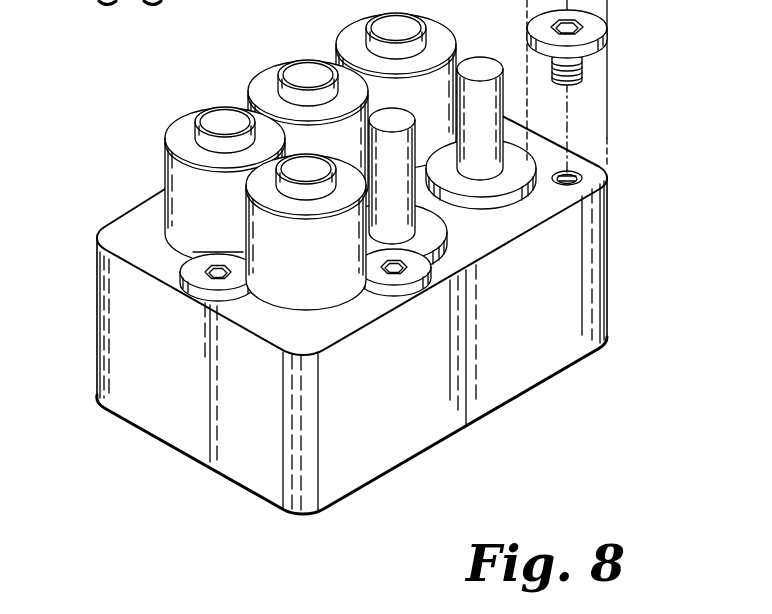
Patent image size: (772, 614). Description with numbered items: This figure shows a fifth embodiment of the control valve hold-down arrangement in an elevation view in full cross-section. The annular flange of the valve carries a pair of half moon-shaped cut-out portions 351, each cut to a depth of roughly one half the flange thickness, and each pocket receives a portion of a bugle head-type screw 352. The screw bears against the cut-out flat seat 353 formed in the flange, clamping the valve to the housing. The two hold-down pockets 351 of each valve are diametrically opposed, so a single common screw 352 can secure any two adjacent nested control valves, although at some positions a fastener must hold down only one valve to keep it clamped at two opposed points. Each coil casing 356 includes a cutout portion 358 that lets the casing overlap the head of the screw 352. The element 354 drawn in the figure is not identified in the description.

The half moon-shaped cut-out portion 351 is at (532, 166).
The bugle head-type screw 352 is at (600, 23).
The cut-out flat seat 353 is at (582, 165).
The raised seat 354 is at (478, 215).
The coil casing 356 is at (182, 132).
The cutout portion 358 is at (190, 298).